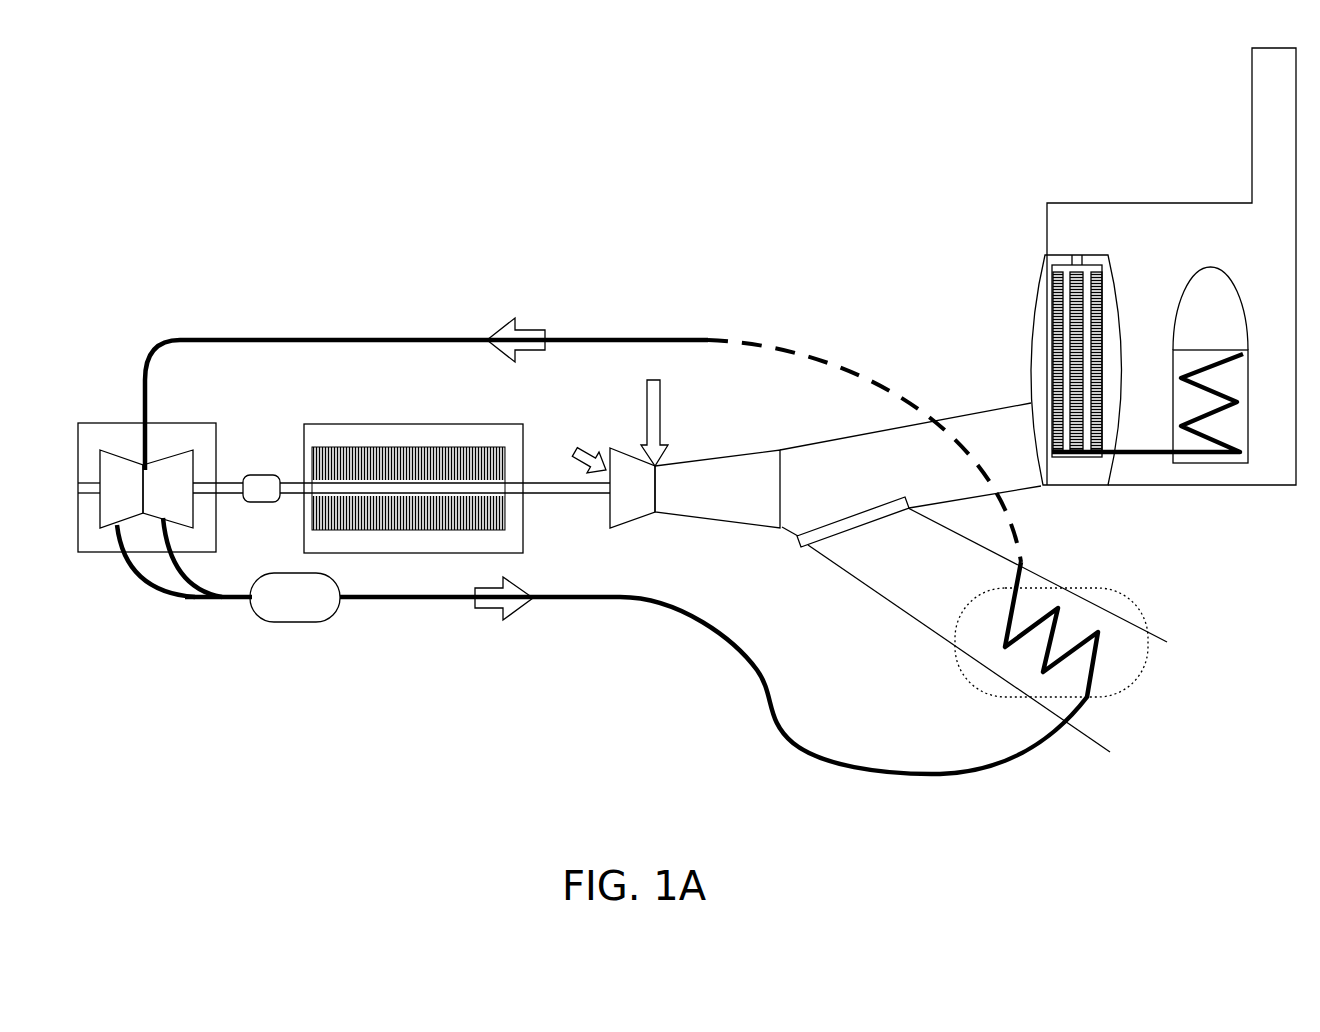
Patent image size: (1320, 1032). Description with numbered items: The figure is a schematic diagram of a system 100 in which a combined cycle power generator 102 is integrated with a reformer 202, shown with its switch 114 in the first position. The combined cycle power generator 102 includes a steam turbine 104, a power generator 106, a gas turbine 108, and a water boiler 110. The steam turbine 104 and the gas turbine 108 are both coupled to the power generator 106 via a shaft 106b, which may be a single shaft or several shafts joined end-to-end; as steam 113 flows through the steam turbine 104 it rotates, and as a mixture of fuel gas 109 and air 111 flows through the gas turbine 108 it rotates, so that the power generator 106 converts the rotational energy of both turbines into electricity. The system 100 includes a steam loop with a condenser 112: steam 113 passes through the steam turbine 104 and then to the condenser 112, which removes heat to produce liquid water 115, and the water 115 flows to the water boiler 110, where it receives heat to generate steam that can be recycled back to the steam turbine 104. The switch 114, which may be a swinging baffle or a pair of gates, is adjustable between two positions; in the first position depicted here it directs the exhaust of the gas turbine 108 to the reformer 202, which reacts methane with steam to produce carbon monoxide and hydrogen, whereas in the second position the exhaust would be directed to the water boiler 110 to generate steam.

The system 100 is at (333, 128).
The combined cycle power generator 102 is at (172, 624).
The steam turbine 104 is at (108, 421).
The power generator 106 is at (360, 422).
The shaft 106b is at (230, 497).
The gas turbine 108 is at (695, 488).
The fuel gas 109 is at (674, 407).
The water boiler 110 is at (1137, 603).
The air 111 is at (570, 454).
The condenser 112 is at (287, 623).
The steam 113 is at (583, 430).
The switch 114 is at (851, 515).
The water 115 is at (719, 668).
The reformer 202 is at (1003, 256).